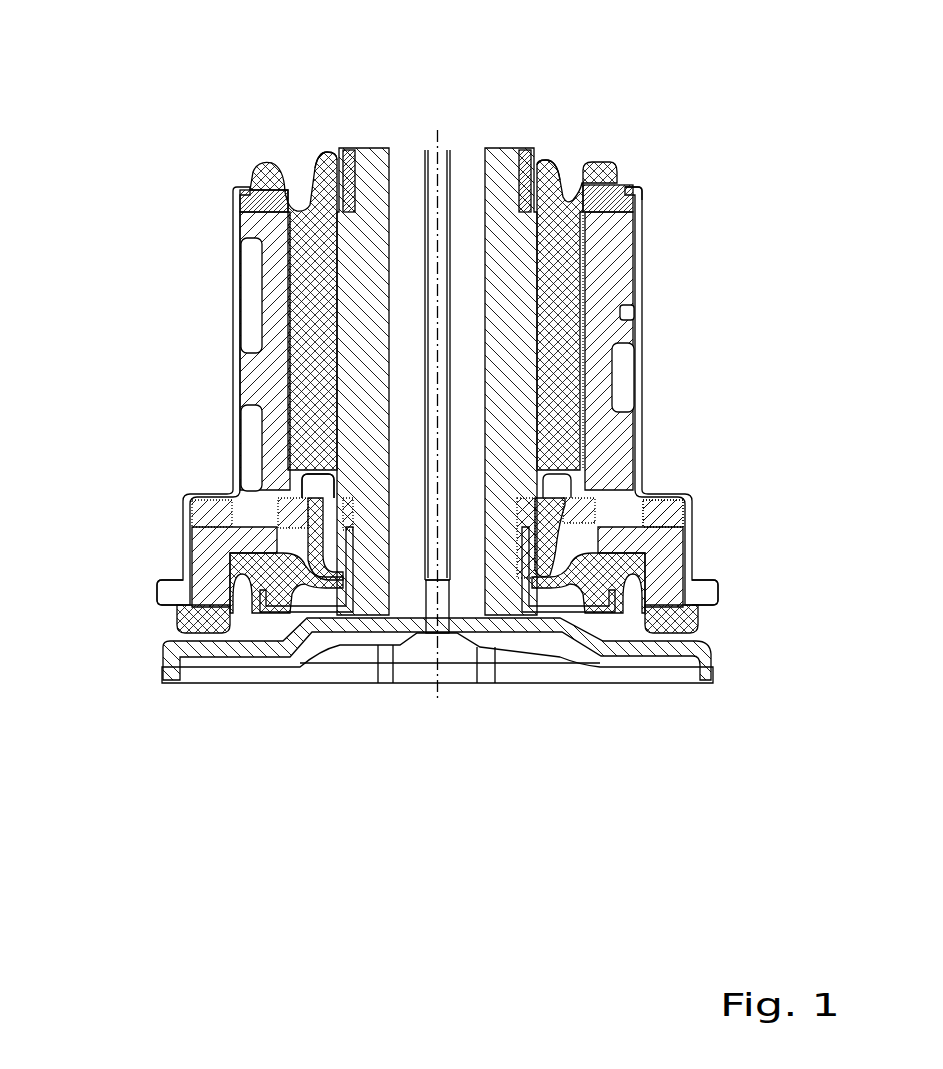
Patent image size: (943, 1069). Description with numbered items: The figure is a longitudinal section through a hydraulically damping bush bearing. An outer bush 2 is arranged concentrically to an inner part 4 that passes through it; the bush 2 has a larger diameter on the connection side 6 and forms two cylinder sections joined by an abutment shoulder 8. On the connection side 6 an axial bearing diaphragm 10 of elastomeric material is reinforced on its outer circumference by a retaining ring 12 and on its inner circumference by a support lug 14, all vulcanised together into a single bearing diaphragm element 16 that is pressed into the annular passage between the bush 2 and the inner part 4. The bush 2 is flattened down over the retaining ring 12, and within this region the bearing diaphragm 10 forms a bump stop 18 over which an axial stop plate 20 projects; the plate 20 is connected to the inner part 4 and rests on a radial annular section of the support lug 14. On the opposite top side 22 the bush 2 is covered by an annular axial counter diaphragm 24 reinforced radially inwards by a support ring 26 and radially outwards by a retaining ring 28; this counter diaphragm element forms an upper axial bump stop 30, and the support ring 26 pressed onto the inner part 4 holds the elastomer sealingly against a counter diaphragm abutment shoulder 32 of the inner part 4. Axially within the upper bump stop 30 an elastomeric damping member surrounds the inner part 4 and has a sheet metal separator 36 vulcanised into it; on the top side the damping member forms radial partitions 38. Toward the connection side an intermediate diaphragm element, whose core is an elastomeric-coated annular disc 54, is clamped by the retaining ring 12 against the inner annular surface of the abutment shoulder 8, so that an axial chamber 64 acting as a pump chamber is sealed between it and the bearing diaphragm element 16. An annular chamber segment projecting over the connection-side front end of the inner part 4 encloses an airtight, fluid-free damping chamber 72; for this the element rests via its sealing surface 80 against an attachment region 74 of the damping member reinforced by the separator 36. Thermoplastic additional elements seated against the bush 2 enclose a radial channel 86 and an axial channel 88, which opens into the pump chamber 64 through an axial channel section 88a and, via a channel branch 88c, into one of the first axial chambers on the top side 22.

The bush 2 is at (637, 257).
The inner part 4 is at (493, 147).
The connection side 6 is at (453, 688).
The abutment shoulder 8 is at (663, 485).
The axial bearing diaphragm 10 is at (265, 565).
The retaining ring 12 is at (163, 595).
The support lug 14 is at (545, 523).
The bearing diaphragm element 16 is at (182, 628).
The bump stop 18 is at (700, 627).
The axial stop plate 20 is at (605, 663).
The top side 22 is at (587, 135).
The axial counter diaphragm 24 is at (560, 148).
The support ring 26 is at (523, 147).
The retaining ring 28 is at (642, 203).
The upper axial bump stop 30 is at (608, 148).
The counter diaphragm abutment shoulder 32 is at (348, 147).
The separator 36 is at (578, 418).
The partitions 38 is at (322, 148).
The annular disc 54 is at (683, 522).
The axial chamber 64 is at (305, 580).
The fluid-free damping chamber 72 is at (558, 612).
The attachment region 74 is at (190, 548).
The sealing surface 80 is at (580, 500).
The radial channel 86 is at (627, 313).
The axial channel 88 is at (623, 378).
The channel section 88a is at (250, 428).
The channel branch 88c is at (250, 322).